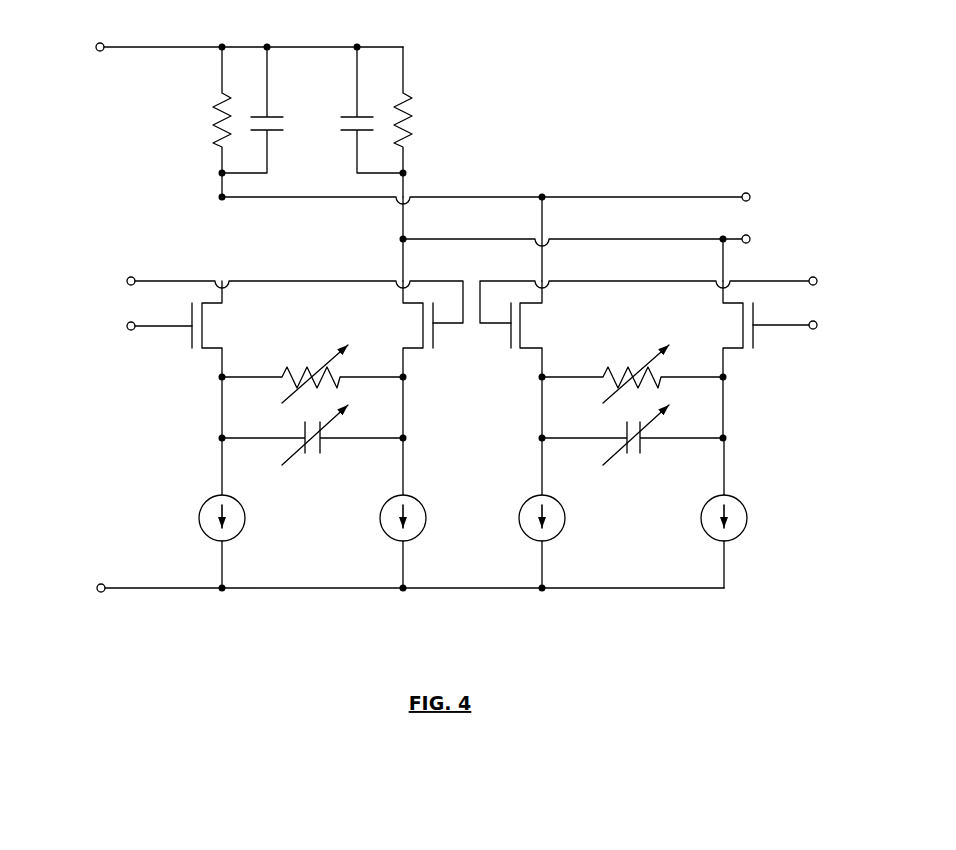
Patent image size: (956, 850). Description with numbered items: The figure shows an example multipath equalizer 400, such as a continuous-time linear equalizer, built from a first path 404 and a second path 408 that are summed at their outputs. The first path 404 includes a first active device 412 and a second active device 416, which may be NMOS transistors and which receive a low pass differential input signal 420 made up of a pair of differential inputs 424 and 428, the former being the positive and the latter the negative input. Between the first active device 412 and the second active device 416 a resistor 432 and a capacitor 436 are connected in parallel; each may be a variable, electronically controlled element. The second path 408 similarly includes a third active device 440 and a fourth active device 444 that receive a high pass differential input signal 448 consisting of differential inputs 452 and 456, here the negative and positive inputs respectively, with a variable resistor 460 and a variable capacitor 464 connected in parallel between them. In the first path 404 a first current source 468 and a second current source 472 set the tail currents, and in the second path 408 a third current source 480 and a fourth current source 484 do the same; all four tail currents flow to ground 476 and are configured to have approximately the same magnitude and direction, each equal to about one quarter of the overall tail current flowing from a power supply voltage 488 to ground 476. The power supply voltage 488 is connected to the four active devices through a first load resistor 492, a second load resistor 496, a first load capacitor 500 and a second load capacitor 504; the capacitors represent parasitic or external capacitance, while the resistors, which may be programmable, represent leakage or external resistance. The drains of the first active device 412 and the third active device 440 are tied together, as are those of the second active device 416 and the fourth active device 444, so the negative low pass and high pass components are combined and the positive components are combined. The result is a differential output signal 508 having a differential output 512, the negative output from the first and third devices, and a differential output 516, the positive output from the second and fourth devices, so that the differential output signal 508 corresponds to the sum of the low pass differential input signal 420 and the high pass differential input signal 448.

The multipath equalizer 400 is at (618, 113).
The first path 404 is at (293, 612).
The second path 408 is at (633, 610).
The first active device 412 is at (192, 346).
The second active device 416 is at (435, 350).
The low pass differential input signal 420 is at (128, 307).
The differential input 424 is at (128, 278).
The differential input 428 is at (130, 330).
The resistor 432 is at (285, 372).
The capacitor 436 is at (322, 450).
The third active device 440 is at (510, 332).
The fourth active device 444 is at (753, 345).
The high pass differential input signal 448 is at (818, 303).
The differential input 452 is at (816, 278).
The differential input 456 is at (815, 329).
The resistor 460 is at (606, 372).
The capacitor 464 is at (642, 448).
The first current source 468 is at (244, 516).
The second current source 472 is at (380, 524).
The ground 476 is at (99, 584).
The third current source 480 is at (519, 522).
The fourth current source 484 is at (701, 522).
The power supply voltage 488 is at (100, 44).
The first load resistor 492 is at (218, 97).
The second load resistor 496 is at (409, 96).
The first load capacitor 500 is at (276, 116).
The second load capacitor 504 is at (351, 132).
The differential output signal 508 is at (752, 218).
The differential output 512 is at (749, 193).
The differential output 516 is at (750, 242).